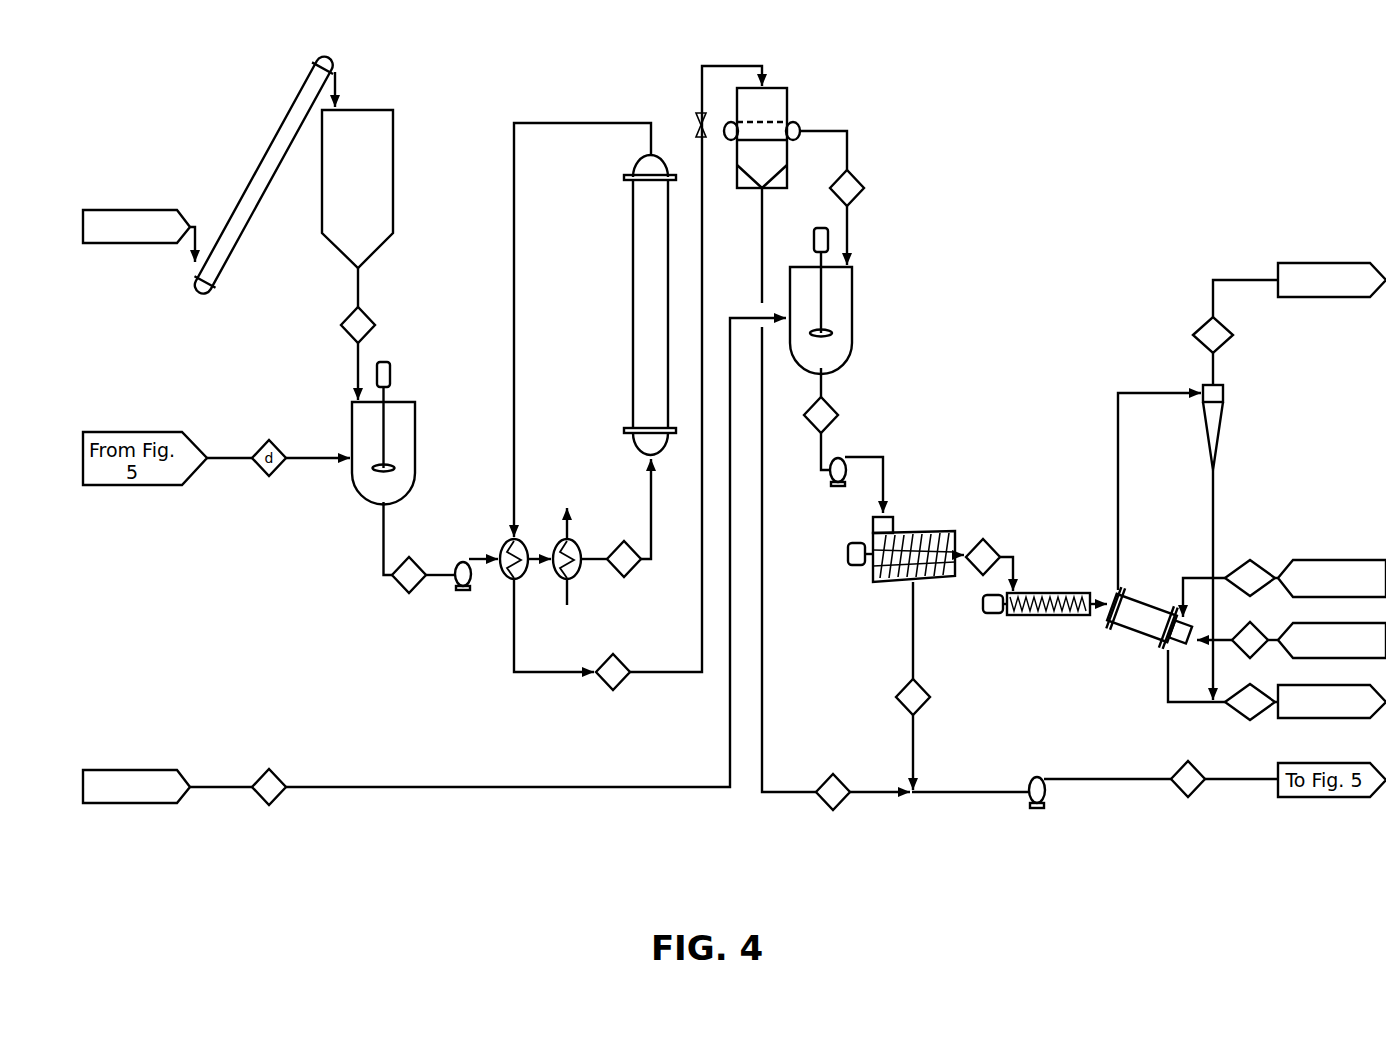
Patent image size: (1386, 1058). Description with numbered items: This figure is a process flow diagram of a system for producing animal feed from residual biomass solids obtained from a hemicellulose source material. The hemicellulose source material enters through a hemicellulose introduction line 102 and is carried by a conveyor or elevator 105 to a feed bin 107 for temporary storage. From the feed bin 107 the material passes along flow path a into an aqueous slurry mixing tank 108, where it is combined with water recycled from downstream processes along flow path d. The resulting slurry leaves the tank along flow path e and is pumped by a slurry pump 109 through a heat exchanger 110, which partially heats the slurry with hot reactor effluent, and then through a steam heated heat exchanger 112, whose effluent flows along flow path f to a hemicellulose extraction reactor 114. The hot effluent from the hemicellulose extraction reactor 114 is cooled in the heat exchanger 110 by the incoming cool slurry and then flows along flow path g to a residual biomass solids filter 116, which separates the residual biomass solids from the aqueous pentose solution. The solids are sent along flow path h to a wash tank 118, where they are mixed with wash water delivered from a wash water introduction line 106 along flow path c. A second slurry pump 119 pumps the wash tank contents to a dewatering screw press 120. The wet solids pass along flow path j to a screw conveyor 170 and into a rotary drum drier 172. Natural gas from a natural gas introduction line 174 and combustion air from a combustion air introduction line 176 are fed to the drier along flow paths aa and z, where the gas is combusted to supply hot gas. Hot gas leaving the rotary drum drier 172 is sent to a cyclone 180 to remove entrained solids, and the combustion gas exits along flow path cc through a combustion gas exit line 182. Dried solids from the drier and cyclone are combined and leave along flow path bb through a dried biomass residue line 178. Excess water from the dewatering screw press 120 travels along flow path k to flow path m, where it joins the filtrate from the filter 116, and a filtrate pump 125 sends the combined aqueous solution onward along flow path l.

The hemicellulose introduction line 102 is at (139, 236).
The conveyor or elevator 105 is at (262, 166).
The wash water introduction line 106 is at (434, 561).
The feed bin 107 is at (398, 178).
The aqueous slurry mixing tank 108 is at (360, 497).
The slurry pump 109 is at (463, 592).
The heat exchanger 110 is at (500, 541).
The steam heated heat exchanger 112 is at (578, 541).
The hemicellulose extraction reactor 114 is at (633, 290).
The residual biomass solids filter 116 is at (787, 95).
The wash tank 118 is at (855, 325).
The slurry pump 119 is at (835, 492).
The dewatering screw press 120 is at (935, 530).
The filtrate pump 125 is at (1033, 775).
The screw conveyor 170 is at (1052, 592).
The rotary drum drier 172 is at (1160, 600).
The natural gas introduction line 174 is at (1291, 640).
The combustion air introduction line 176 is at (1305, 578).
The dried biomass residue line 178 is at (1305, 702).
The cyclone 180 is at (1222, 420).
The combustion gas exit line 182 is at (1332, 280).